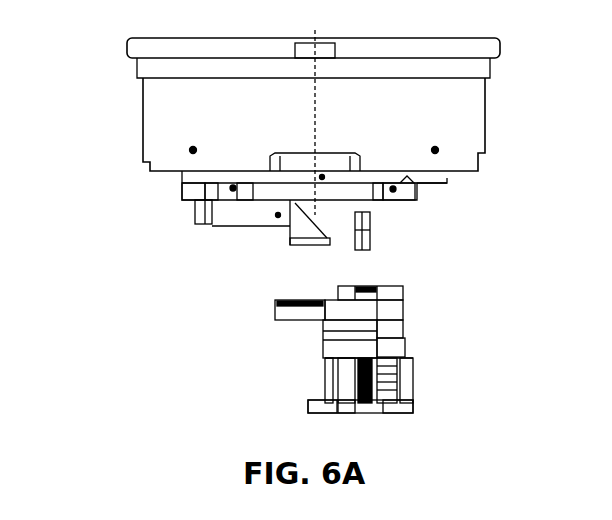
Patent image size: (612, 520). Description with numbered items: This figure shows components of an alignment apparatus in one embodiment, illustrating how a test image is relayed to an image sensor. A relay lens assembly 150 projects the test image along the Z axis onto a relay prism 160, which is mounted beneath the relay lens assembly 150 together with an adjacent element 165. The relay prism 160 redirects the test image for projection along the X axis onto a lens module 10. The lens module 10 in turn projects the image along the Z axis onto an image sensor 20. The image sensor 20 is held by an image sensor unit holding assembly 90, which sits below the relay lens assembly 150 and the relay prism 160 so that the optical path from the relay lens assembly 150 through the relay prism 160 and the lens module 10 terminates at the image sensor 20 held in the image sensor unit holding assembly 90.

The relay lens assembly 150 is at (153, 107).
The bracket 165 is at (197, 226).
The relay prism 160 is at (290, 229).
The lens module 10 is at (372, 232).
The image sensor 20 is at (354, 286).
The image sensor unit holding assembly 90 is at (399, 318).